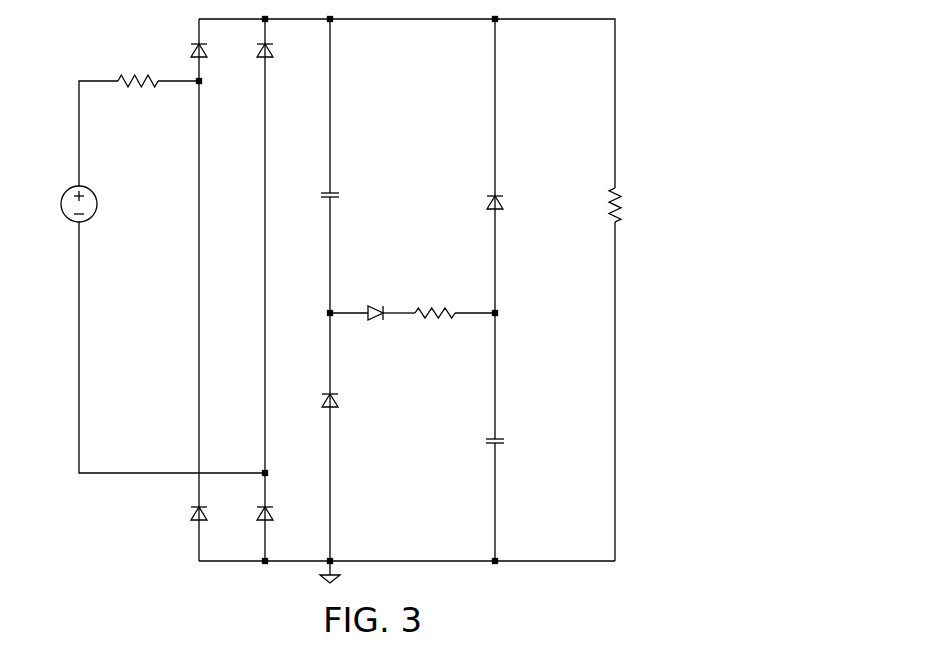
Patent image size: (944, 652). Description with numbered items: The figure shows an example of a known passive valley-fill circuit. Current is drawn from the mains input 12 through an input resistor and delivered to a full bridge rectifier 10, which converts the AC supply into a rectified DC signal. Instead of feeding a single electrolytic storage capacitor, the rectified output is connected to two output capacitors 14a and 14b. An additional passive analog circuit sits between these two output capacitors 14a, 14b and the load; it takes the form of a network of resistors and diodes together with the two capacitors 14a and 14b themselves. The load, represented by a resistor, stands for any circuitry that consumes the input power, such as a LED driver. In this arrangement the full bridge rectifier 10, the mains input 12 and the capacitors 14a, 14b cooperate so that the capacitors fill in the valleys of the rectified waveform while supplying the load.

The full bridge rectifier 10 is at (166, 519).
The mains input 12 is at (66, 192).
The output capacitor 14a is at (333, 198).
The output capacitor 14b is at (492, 446).